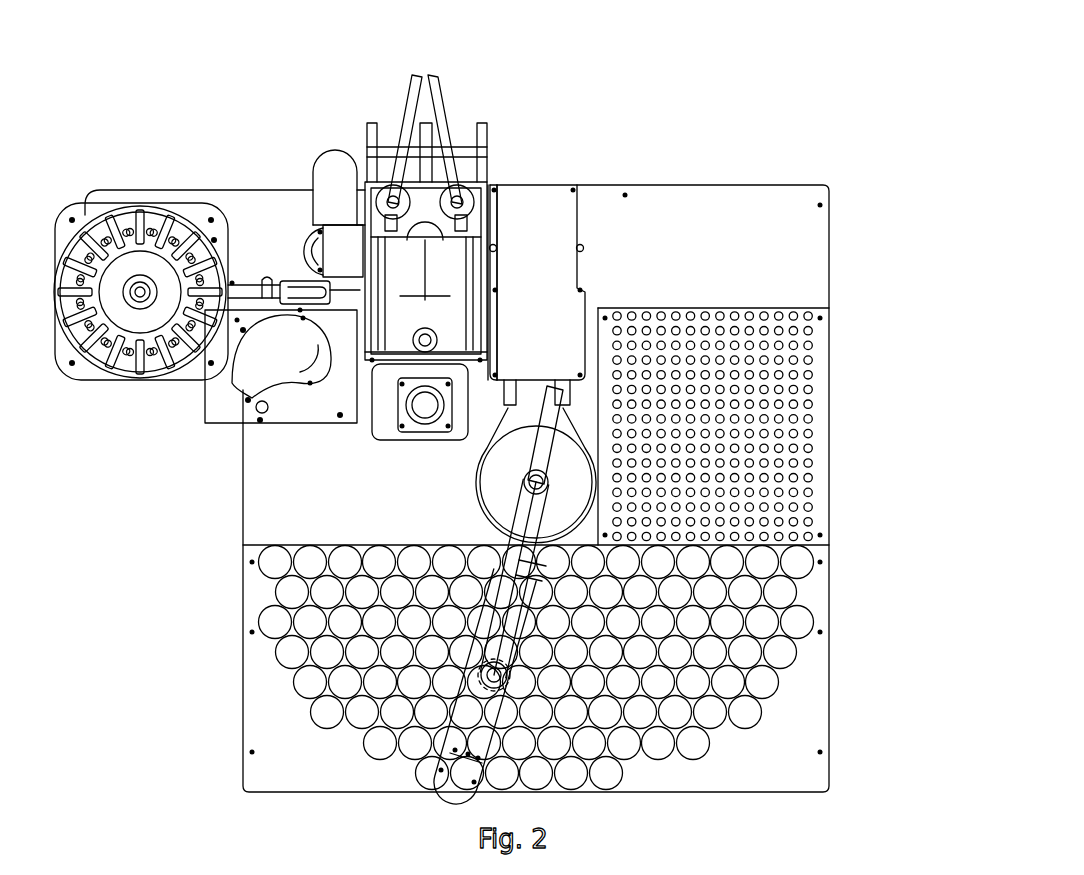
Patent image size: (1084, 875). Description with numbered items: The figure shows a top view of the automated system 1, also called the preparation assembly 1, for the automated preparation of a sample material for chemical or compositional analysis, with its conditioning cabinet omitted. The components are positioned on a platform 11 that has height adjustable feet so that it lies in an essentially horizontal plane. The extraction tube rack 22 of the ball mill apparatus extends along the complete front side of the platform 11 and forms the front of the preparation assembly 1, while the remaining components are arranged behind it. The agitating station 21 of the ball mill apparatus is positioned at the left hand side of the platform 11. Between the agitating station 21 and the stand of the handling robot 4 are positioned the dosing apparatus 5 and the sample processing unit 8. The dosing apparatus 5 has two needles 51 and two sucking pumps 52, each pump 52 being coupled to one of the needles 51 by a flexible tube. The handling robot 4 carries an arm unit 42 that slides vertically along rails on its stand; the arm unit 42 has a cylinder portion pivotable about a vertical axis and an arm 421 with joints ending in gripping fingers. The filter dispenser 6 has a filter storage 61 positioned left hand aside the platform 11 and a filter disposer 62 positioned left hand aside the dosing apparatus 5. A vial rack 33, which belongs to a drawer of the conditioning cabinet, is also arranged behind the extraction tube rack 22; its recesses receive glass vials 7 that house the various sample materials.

The automated system 1 is at (774, 122).
The handling robot 4 is at (551, 176).
The dosing apparatus 5 is at (335, 223).
The filter dispenser 6 is at (183, 220).
The glass vials 7 is at (818, 356).
The sample processing unit 8 is at (358, 434).
The platform 11 is at (808, 263).
The agitating station 21 is at (303, 318).
The extraction tube rack 22 is at (806, 772).
The vial rack 33 is at (778, 425).
The arm unit 42 is at (690, 434).
The needles 51 is at (417, 73).
The sucking pumps 52 is at (380, 165).
The filter storage 61 is at (108, 218).
The filter disposer 62 is at (330, 163).
The arm 421 is at (488, 710).